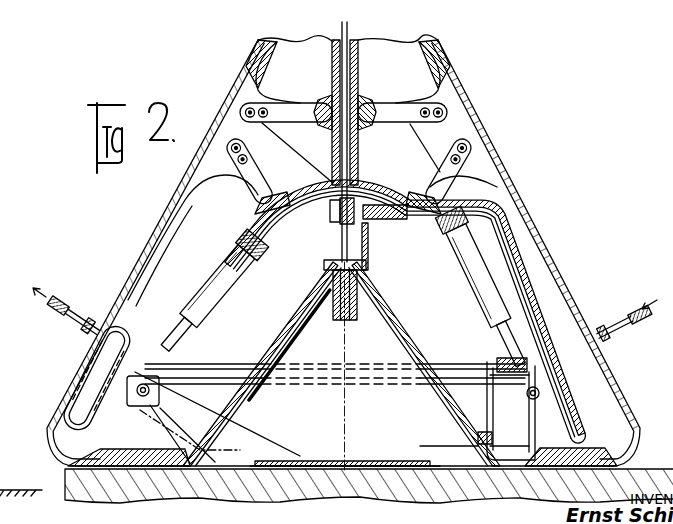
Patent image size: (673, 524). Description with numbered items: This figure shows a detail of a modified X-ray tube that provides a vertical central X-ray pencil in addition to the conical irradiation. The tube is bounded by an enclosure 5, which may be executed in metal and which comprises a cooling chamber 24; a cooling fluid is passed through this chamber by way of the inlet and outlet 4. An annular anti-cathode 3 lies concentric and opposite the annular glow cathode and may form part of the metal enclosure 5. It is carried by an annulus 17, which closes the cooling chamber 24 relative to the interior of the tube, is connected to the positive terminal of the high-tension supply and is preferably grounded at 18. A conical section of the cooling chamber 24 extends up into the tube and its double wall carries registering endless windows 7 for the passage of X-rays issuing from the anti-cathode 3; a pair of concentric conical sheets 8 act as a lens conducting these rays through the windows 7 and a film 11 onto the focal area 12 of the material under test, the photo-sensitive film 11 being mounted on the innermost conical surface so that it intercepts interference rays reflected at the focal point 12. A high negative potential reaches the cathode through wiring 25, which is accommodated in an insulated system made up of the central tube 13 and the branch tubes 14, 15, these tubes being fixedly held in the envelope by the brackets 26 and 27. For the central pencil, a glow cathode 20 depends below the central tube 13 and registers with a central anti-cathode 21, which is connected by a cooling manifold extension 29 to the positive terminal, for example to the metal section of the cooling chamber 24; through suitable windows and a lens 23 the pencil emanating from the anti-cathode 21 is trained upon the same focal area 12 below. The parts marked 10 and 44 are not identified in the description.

The anti-cathode 3 is at (570, 420).
The inlet and outlet 4 is at (66, 300).
The enclosure 5 is at (64, 396).
The registering endless windows 7 is at (478, 440).
The pair of concentric conical sheets 8 is at (512, 384).
The lower link 10 is at (190, 462).
The film 11 is at (440, 393).
The focal area or point 12 is at (338, 468).
The central tube 13 is at (362, 55).
The branch tube 14 is at (228, 284).
The branch tube 15 is at (437, 250).
The annulus 17 is at (128, 455).
The ground 18 is at (30, 487).
The glow cathode 20 is at (328, 208).
The anti-cathode 21 is at (345, 222).
The lens 23 is at (352, 316).
The cooling chamber 24 is at (100, 358).
The wiring 25 is at (346, 35).
The bracket 26 is at (413, 107).
The bracket 27 is at (470, 153).
The cooling manifold extension 29 is at (365, 240).
The base plate 44 is at (385, 465).